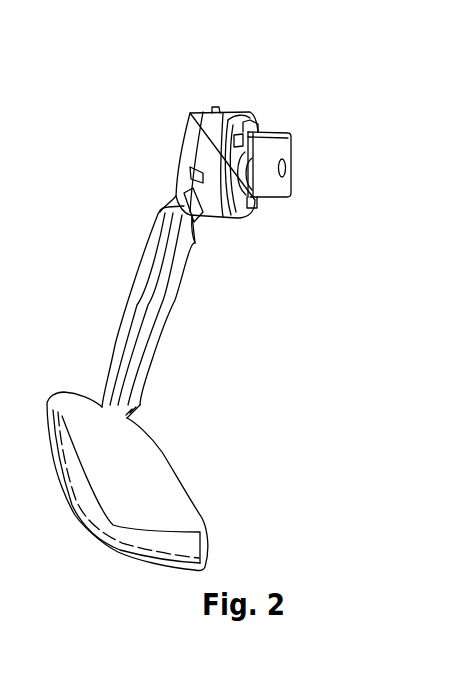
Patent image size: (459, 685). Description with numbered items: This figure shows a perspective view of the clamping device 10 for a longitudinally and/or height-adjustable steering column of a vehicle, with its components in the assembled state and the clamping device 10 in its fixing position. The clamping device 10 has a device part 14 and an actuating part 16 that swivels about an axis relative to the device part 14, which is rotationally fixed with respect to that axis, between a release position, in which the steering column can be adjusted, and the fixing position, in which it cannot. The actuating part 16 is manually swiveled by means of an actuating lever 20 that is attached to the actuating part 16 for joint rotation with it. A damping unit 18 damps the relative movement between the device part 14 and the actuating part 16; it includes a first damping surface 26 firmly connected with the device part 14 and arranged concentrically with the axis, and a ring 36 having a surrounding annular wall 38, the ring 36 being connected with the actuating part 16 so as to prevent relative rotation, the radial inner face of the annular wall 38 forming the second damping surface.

The clamping device 10 is at (120, 125).
The device part 14 is at (276, 115).
The actuating part 16 is at (232, 101).
The damping unit 18 is at (286, 229).
The actuating lever 20 is at (135, 372).
The first damping surface 26 is at (250, 146).
The ring 36 is at (213, 201).
The annular wall 38 is at (252, 227).